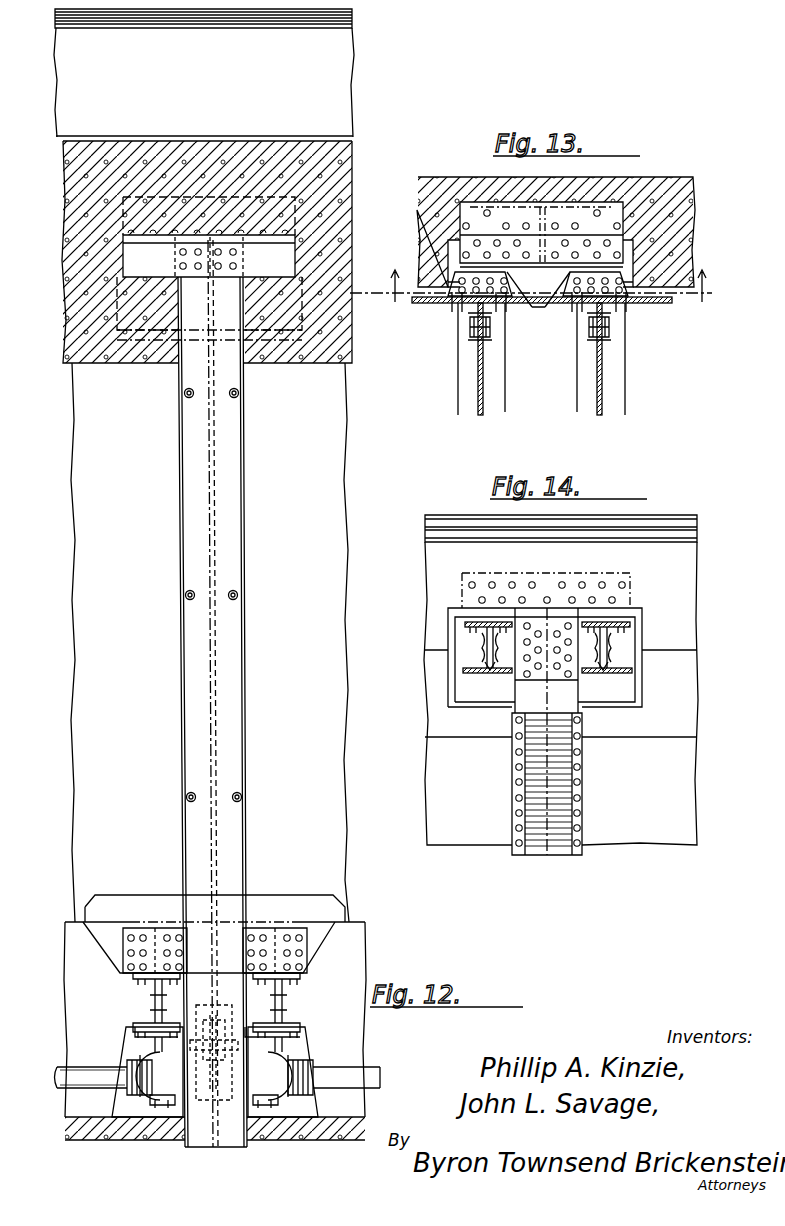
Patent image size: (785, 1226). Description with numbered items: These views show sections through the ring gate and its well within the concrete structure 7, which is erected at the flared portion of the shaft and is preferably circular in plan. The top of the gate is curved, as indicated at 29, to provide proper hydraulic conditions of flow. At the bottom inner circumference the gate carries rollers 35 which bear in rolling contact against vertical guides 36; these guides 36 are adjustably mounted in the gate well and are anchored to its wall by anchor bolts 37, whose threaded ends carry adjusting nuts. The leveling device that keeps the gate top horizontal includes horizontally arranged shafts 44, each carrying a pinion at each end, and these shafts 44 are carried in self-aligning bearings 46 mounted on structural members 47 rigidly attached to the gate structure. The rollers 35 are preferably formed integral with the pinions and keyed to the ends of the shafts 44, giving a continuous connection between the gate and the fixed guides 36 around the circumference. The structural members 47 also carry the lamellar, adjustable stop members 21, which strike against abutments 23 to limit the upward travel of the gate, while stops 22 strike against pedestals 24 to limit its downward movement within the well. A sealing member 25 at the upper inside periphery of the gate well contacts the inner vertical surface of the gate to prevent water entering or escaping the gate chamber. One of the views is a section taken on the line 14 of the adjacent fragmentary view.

In FIG. 12, the concrete structure 7 is at (68, 333).
In FIG. 12, the curved top portion of the gate 29 is at (204, 75).
In FIG. 12, the vertical guides 36 is at (186, 556).
In FIG. 12, the anchor bolts 37 is at (194, 396).
In FIG. 12, the stops 22 is at (152, 1001).
In FIG. 12, the pedestals 24 is at (128, 1050).
In FIG. 12, the rollers 35 is at (172, 1110).
In FIG. 12, the self-aligning bearings 46 is at (150, 1103).
In FIG. 12, the shafts 44 is at (75, 1081).
In FIG. 13, the abutments 23 is at (500, 210).
In FIG. 14, the abutments 23 is at (512, 625).
In FIG. 13, the stops 21 is at (552, 302).
In FIG. 14, the stops 21 is at (468, 622).
In FIG. 13, the structural members 47 is at (602, 374).
In FIG. 14, the structural members 47 is at (487, 650).
In FIG. 13, the section line 14— 14 is at (385, 303).
In FIG. 14, the sealing member 25 is at (470, 525).